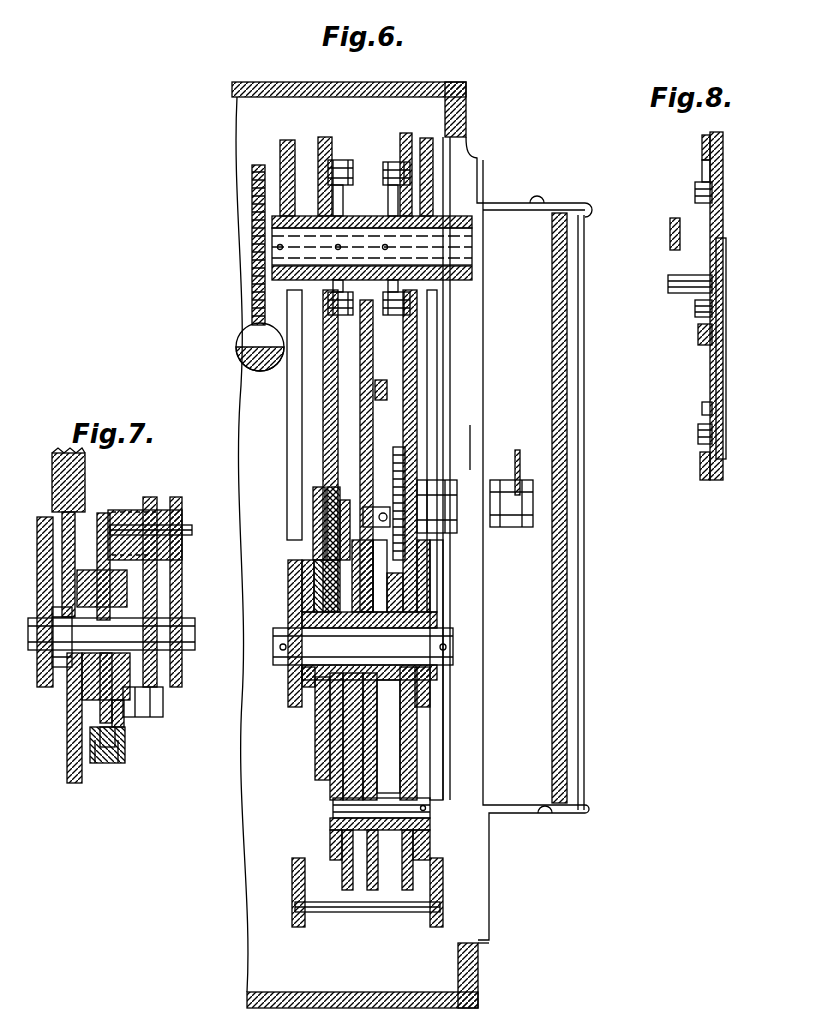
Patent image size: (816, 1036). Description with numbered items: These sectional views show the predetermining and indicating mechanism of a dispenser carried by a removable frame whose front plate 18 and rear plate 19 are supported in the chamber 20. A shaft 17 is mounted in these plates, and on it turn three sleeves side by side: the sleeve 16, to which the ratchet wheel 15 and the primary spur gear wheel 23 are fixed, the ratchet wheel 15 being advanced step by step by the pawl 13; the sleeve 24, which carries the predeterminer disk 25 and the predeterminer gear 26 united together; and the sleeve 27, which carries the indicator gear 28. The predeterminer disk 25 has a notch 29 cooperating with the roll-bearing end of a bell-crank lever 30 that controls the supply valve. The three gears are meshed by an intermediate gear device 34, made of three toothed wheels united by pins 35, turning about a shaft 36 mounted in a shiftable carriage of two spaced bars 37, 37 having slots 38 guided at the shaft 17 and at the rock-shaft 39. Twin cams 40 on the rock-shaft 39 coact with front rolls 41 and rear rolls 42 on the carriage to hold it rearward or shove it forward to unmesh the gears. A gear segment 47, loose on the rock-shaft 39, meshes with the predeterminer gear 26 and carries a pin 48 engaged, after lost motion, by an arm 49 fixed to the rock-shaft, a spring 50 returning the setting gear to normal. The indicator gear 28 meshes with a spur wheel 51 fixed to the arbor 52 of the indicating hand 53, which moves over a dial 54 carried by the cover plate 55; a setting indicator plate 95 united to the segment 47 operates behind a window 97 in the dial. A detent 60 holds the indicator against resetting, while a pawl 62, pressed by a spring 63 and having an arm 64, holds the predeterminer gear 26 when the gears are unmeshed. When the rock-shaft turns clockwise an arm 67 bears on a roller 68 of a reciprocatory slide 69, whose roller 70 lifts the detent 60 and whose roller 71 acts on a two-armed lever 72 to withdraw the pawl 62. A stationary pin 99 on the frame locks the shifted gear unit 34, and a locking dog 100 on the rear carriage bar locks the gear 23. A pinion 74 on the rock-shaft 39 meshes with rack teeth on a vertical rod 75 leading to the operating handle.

In FIG. 7, the pawl 13 is at (83, 485).
In FIG. 6, the ratchet wheel 15 is at (330, 740).
In FIG. 7, the ratchet wheel 15 is at (68, 740).
In FIG. 6, the sleeve 16 is at (300, 680).
In FIG. 7, the sleeve 16 is at (50, 688).
In FIG. 6, the shaft 17 is at (450, 640).
In FIG. 7, the shaft 17 is at (180, 630).
In FIG. 6, the front plate 18 is at (440, 690).
In FIG. 7, the front plate 18 is at (182, 675).
In FIG. 8, the front plate 18 is at (724, 225).
In FIG. 6, the rear plate 19 is at (295, 873).
In FIG. 7, the rear plate 19 is at (45, 585).
In FIG. 6, the chamber 20 is at (432, 108).
In FIG. 6, the spur gear wheel 23 is at (340, 700).
In FIG. 7, the spur gear wheel 23 is at (88, 700).
In FIG. 6, the sleeve 24 is at (335, 605).
In FIG. 7, the sleeve 24 is at (118, 705).
In FIG. 6, the predeterminer disk 25 is at (335, 512).
In FIG. 7, the predeterminer disk 25 is at (110, 763).
In FIG. 6, the predeterminer gear 26 is at (355, 700).
In FIG. 7, the predeterminer gear 26 is at (123, 735).
In FIG. 6, the sleeve 27 is at (400, 600).
In FIG. 7, the sleeve 27 is at (155, 590).
In FIG. 6, the indicator gear 28 is at (425, 578).
In FIG. 7, the indicator gear 28 is at (150, 710).
In FIG. 7, the notch 29 is at (95, 765).
In FIG. 7, the bell-crank lever 30 is at (125, 765).
In FIG. 6, the intermediate gear device 34 is at (407, 893).
In FIG. 6, the pins 35 is at (418, 835).
In FIG. 6, the shaft 36 is at (430, 790).
In FIG. 6, the carriage plates 37 is at (330, 405).
In FIG. 7, the carriage plates 37 is at (80, 555).
In FIG. 6, the slots 38 is at (425, 215).
In FIG. 6, the rock-shaft 39 is at (470, 250).
In FIG. 6, the twin cams 40 is at (385, 200).
In FIG. 6, the front rolls 41 is at (300, 355).
In FIG. 6, the rear rolls 42 is at (338, 160).
In FIG. 6, the gear segment 47 is at (368, 440).
In FIG. 6, the pin 48 is at (432, 405).
In FIG. 6, the arm 49 is at (450, 358).
In FIG. 6, the spring 50 is at (335, 535).
In FIG. 6, the spur wheel 51 is at (395, 448).
In FIG. 6, the arbor 52 is at (520, 456).
In FIG. 6, the indicating hand 53 is at (535, 470).
In FIG. 6, the dial 54 is at (488, 290).
In FIG. 6, the cover plate 55 is at (478, 165).
In FIG. 8, the detent 60 is at (720, 334).
In FIG. 7, the pawl 62 is at (138, 505).
In FIG. 7, the spring 63 is at (145, 512).
In FIG. 7, the arm 64 is at (180, 560).
In FIG. 8, the arm 67 is at (670, 222).
In FIG. 8, the roller 68 is at (673, 277).
In FIG. 8, the reciprocatory slide 69 is at (720, 253).
In FIG. 8, the roller 70 is at (698, 312).
In FIG. 8, the roller 71 is at (700, 437).
In FIG. 8, the two-armed lever 72 is at (702, 474).
In FIG. 6, the pinion 74 is at (258, 165).
In FIG. 6, the rod 75 is at (245, 350).
In FIG. 6, the setting indicator plate 95 is at (478, 390).
In FIG. 6, the window 97 is at (470, 425).
In FIG. 6, the stationary pin 99 is at (325, 912).
In FIG. 6, the locking dog 100 is at (325, 480).